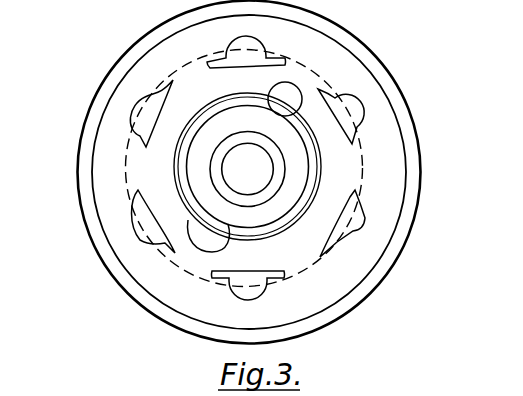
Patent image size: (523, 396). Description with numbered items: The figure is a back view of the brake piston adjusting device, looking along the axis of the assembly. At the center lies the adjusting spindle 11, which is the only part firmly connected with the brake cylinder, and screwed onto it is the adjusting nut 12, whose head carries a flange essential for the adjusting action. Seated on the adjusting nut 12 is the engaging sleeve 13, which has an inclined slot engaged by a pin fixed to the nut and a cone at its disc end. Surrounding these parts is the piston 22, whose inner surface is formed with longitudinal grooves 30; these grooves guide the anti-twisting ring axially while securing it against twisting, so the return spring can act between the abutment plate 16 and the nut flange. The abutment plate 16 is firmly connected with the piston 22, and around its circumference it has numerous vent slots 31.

The adjusting spindle 11 is at (205, 236).
The adjusting nut 12 is at (240, 206).
The engaging sleeve 13 is at (182, 193).
The abutment plate 16 is at (167, 172).
The piston 22 is at (100, 143).
The longitudinal grooves 30 is at (353, 118).
The vent slots 31 is at (288, 92).